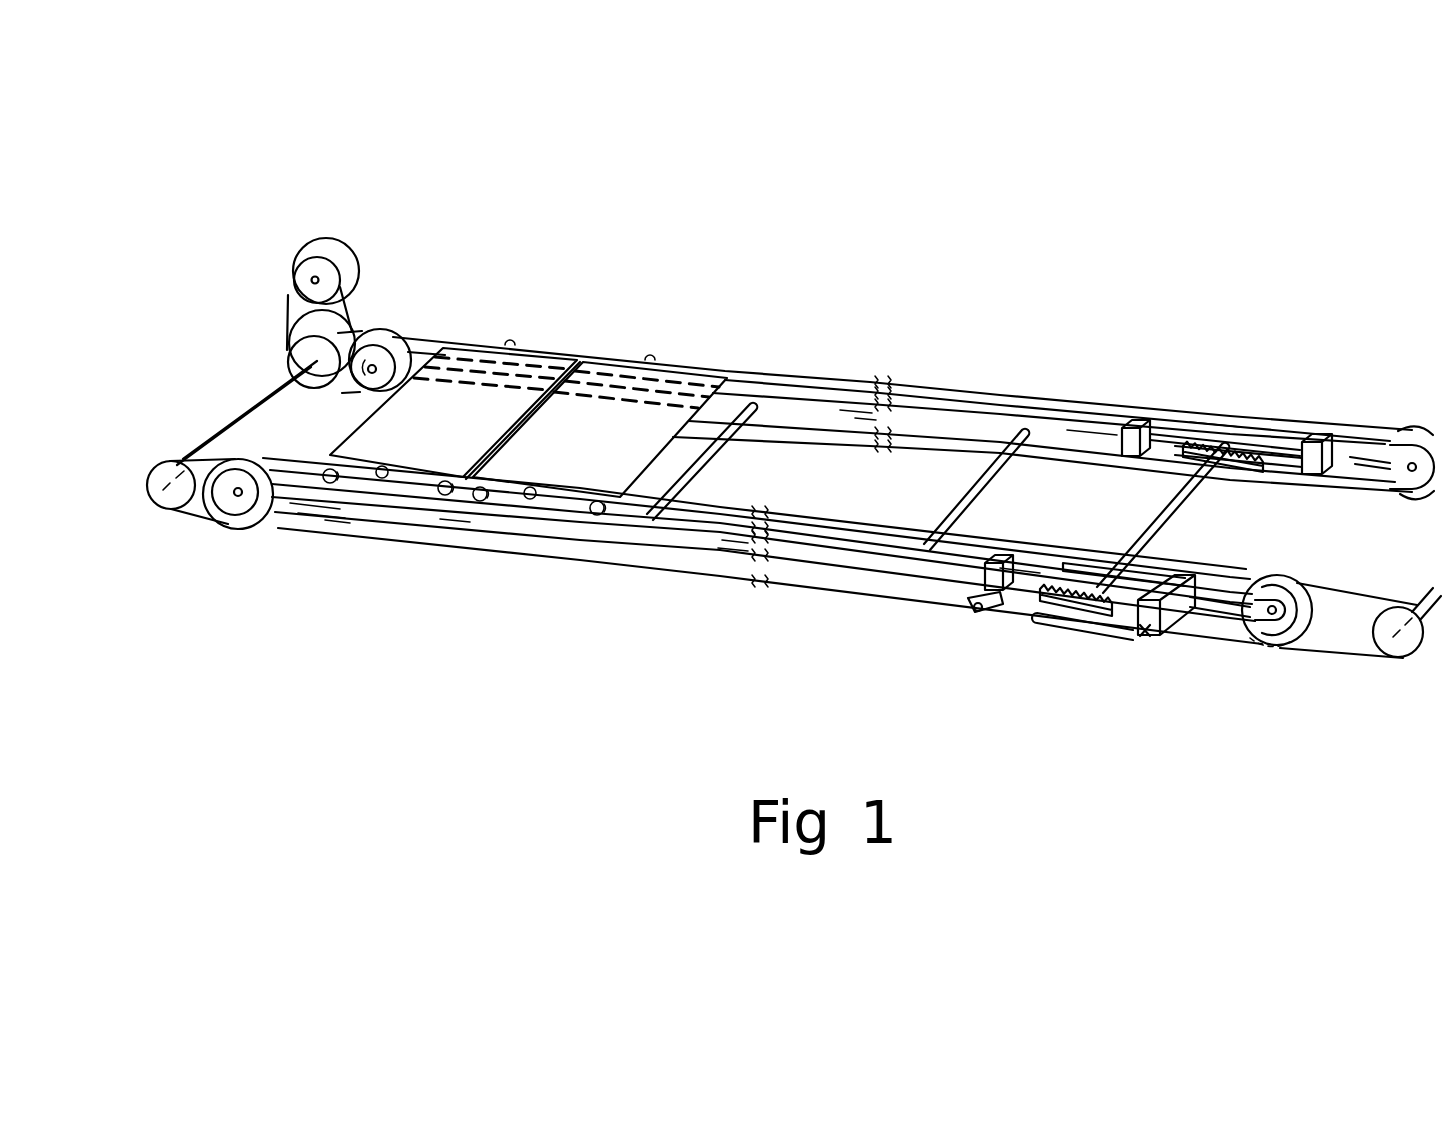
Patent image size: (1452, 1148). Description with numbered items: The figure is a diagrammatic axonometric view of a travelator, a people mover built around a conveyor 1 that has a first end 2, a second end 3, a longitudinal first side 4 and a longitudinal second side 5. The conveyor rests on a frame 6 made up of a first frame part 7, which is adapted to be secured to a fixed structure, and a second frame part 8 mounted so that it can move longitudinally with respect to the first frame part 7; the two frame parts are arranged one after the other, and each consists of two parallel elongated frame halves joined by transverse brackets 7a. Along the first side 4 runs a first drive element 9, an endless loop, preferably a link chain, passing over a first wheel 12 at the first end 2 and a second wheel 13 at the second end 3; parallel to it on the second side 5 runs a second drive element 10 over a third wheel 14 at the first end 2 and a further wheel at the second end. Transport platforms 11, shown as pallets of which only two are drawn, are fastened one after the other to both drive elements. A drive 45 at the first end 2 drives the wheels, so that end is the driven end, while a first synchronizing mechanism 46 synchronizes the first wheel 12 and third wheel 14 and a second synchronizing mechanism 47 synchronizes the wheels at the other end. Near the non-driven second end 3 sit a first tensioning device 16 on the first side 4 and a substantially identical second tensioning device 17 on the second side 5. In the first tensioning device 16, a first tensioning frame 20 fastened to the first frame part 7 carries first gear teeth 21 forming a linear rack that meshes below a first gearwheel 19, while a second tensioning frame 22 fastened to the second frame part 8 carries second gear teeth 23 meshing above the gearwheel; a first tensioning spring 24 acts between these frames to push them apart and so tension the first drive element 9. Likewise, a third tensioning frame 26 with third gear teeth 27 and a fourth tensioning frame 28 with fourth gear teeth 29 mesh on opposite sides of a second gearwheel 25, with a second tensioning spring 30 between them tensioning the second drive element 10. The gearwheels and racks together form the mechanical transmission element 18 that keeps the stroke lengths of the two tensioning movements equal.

The conveyor 1 is at (828, 268).
The first end 2 is at (250, 556).
The second end 3 is at (1273, 691).
The longitudinal first side 4 is at (788, 593).
The longitudinal second side 5 is at (832, 360).
The frame 6 is at (630, 540).
The first frame part 7 is at (788, 412).
The transverse brackets 7a is at (703, 472).
The second frame part 8 is at (1367, 467).
The first drive element 9 is at (872, 597).
The second drive element 10 is at (972, 392).
The transport platforms 11 is at (488, 377).
The first wheel 12 is at (257, 463).
The second wheel 13 is at (1295, 576).
The third wheel 14 is at (395, 330).
The first tensioning device 16 is at (1070, 682).
The second tensioning device 17 is at (1258, 365).
The mechanical transmission element 18 is at (1132, 508).
The first gearwheel 19 is at (1078, 630).
The first tensioning frame 20 is at (972, 620).
The first gear teeth 21 is at (1053, 583).
The second tensioning frame 22 is at (1177, 592).
The second gear teeth 23 is at (1140, 632).
The first tensioning spring 24 is at (1055, 627).
The second gearwheel 25 is at (1227, 433).
The third tensioning frame 26 is at (1147, 425).
The third gear teeth 27 is at (1190, 437).
The fourth tensioning frame 28 is at (1318, 442).
The fourth gear teeth 29 is at (1267, 452).
The second tensioning spring 30 is at (1178, 430).
The drive 45 is at (333, 246).
The first synchronizing mechanism 46 is at (258, 387).
The second synchronizing mechanism 47 is at (1433, 713).